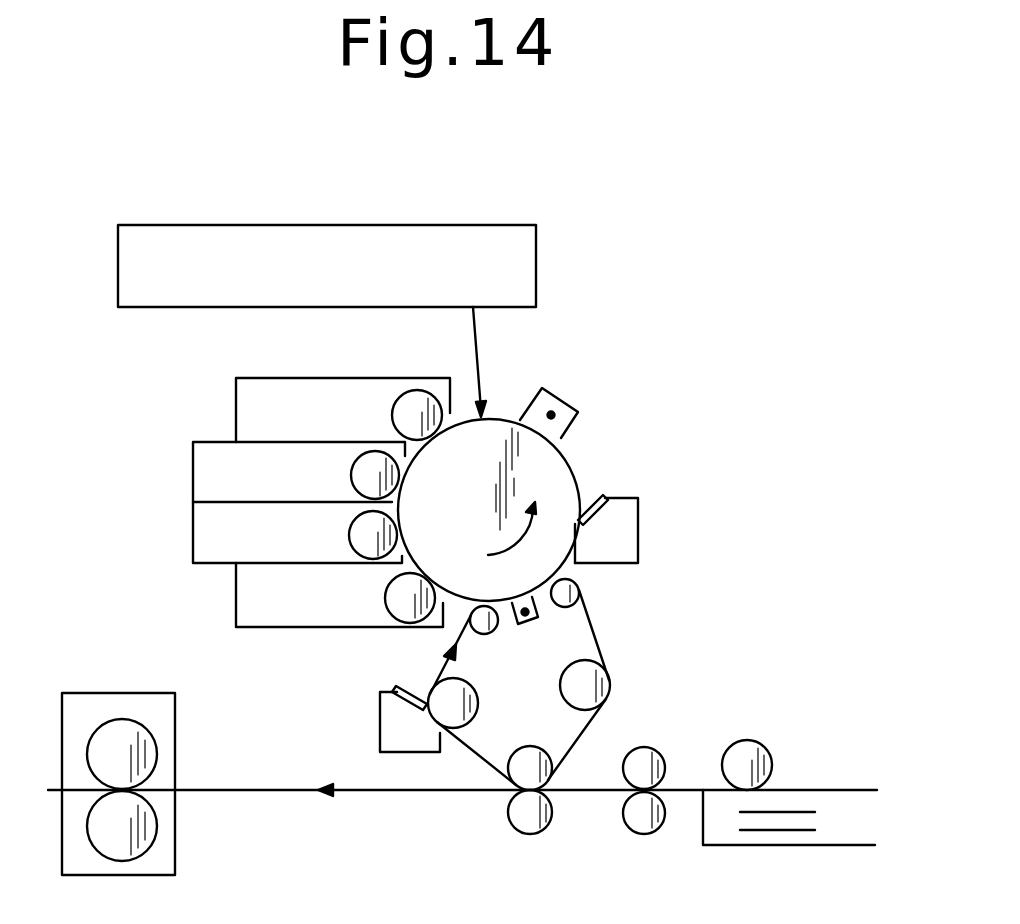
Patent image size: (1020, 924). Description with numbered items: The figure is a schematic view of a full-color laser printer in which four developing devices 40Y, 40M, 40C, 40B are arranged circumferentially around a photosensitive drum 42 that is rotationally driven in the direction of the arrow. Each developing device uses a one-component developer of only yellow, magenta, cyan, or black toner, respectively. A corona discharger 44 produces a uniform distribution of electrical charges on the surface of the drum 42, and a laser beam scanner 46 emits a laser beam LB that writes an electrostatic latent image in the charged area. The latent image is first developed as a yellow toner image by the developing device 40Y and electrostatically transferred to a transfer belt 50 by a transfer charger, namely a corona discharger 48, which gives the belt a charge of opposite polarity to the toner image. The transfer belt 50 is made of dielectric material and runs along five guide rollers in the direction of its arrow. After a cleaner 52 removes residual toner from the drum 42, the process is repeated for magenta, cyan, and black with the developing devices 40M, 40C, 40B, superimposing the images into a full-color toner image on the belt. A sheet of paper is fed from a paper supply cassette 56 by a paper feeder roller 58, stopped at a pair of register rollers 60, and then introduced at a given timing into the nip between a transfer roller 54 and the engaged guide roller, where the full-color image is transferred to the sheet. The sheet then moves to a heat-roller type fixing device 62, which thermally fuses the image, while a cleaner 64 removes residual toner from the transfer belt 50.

The laser beam scanner 46 is at (536, 262).
The laser beam LB is at (478, 356).
The photosensitive drum 42 is at (586, 466).
The corona discharger 44 is at (567, 406).
The cleaner 52 is at (638, 535).
The developing device 40Y is at (236, 398).
The developing device 40M is at (193, 462).
The developing device 40C is at (193, 534).
The developing device 40B is at (236, 602).
The transfer belt 50 is at (596, 632).
The corona discharger 48 is at (526, 628).
The cleaner 64 is at (380, 724).
The transfer roller 54 is at (518, 826).
The register rollers 60 is at (665, 812).
The paper feeder roller 58 is at (770, 760).
The paper supply cassette 56 is at (818, 846).
The heat-roller type fixing device 62 is at (184, 844).